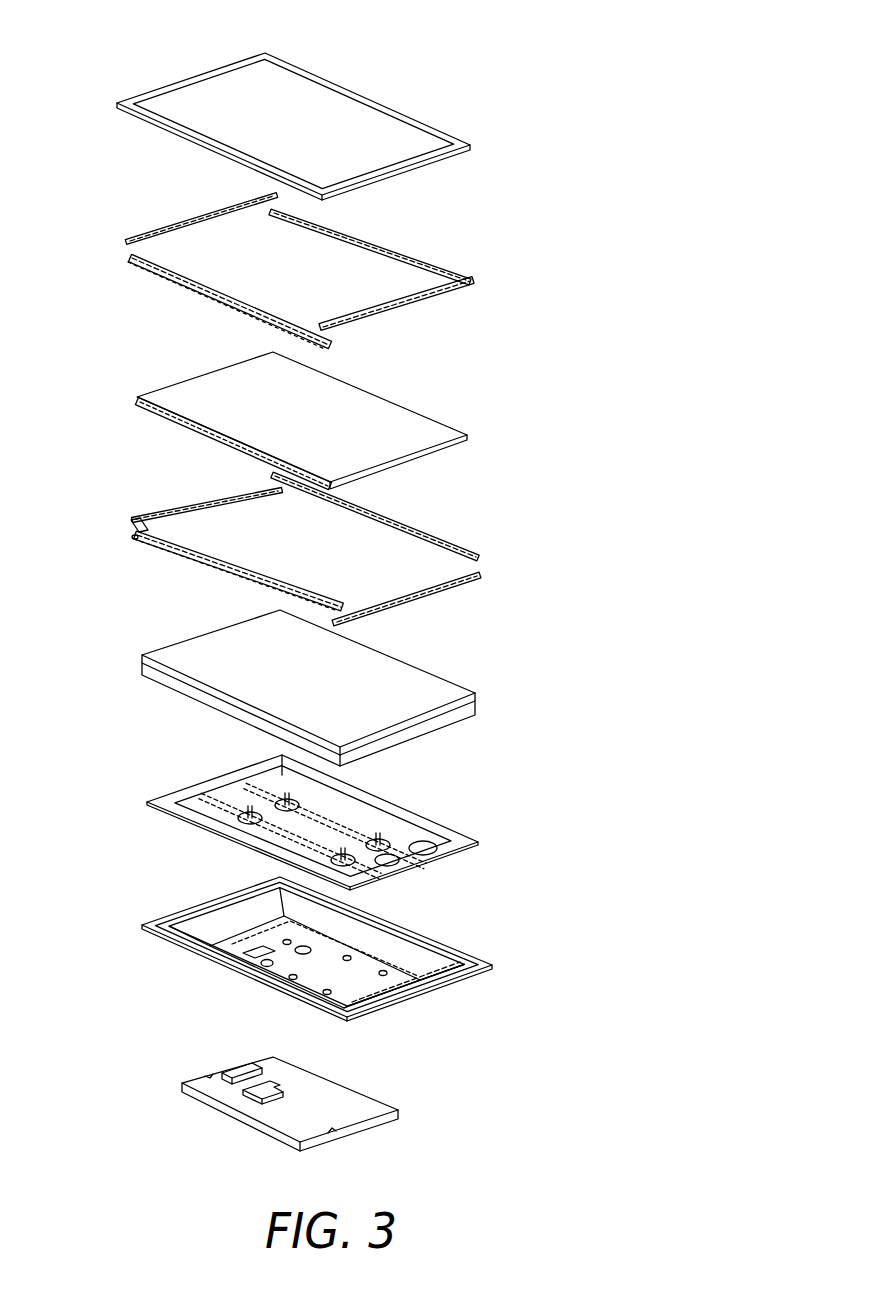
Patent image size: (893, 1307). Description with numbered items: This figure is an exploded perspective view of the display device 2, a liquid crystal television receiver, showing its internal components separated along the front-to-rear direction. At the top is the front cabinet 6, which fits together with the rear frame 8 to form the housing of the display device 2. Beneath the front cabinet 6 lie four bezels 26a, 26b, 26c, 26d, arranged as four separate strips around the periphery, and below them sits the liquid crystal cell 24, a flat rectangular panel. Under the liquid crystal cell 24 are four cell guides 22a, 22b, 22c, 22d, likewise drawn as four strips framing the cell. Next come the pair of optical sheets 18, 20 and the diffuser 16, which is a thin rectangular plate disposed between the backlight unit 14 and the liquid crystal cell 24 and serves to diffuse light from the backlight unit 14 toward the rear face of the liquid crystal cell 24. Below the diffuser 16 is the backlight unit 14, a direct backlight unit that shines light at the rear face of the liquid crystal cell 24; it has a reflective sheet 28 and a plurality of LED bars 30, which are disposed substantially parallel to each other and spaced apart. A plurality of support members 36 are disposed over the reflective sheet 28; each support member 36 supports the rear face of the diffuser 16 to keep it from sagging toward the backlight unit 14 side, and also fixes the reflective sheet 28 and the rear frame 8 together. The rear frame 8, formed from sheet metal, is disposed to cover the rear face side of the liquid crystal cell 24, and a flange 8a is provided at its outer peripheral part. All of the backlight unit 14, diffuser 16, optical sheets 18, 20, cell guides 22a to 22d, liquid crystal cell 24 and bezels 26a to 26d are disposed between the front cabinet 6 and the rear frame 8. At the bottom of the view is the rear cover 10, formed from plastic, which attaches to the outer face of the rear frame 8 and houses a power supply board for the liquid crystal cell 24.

The display device 2 is at (462, 47).
The front cabinet 6 is at (345, 84).
The bezel 26a is at (433, 300).
The bezel 26b is at (423, 270).
The bezel 26c is at (168, 228).
The bezel 26d is at (167, 267).
The liquid crystal cell 24 is at (390, 412).
The cell guide 22a is at (457, 588).
The cell guide 22b is at (457, 550).
The cell guide 22c is at (183, 515).
The cell guide 22d is at (180, 538).
The optical sheet 20 is at (413, 685).
The optical sheet 18 is at (480, 707).
The diffuser 16 is at (440, 723).
The reflective sheet 28 is at (438, 832).
The backlight unit 14 is at (206, 797).
The support member 36 is at (253, 812).
The LED bar 30 is at (397, 882).
The rear frame 8 is at (442, 965).
The flange 8a is at (427, 993).
The rear cover 10 is at (343, 1108).